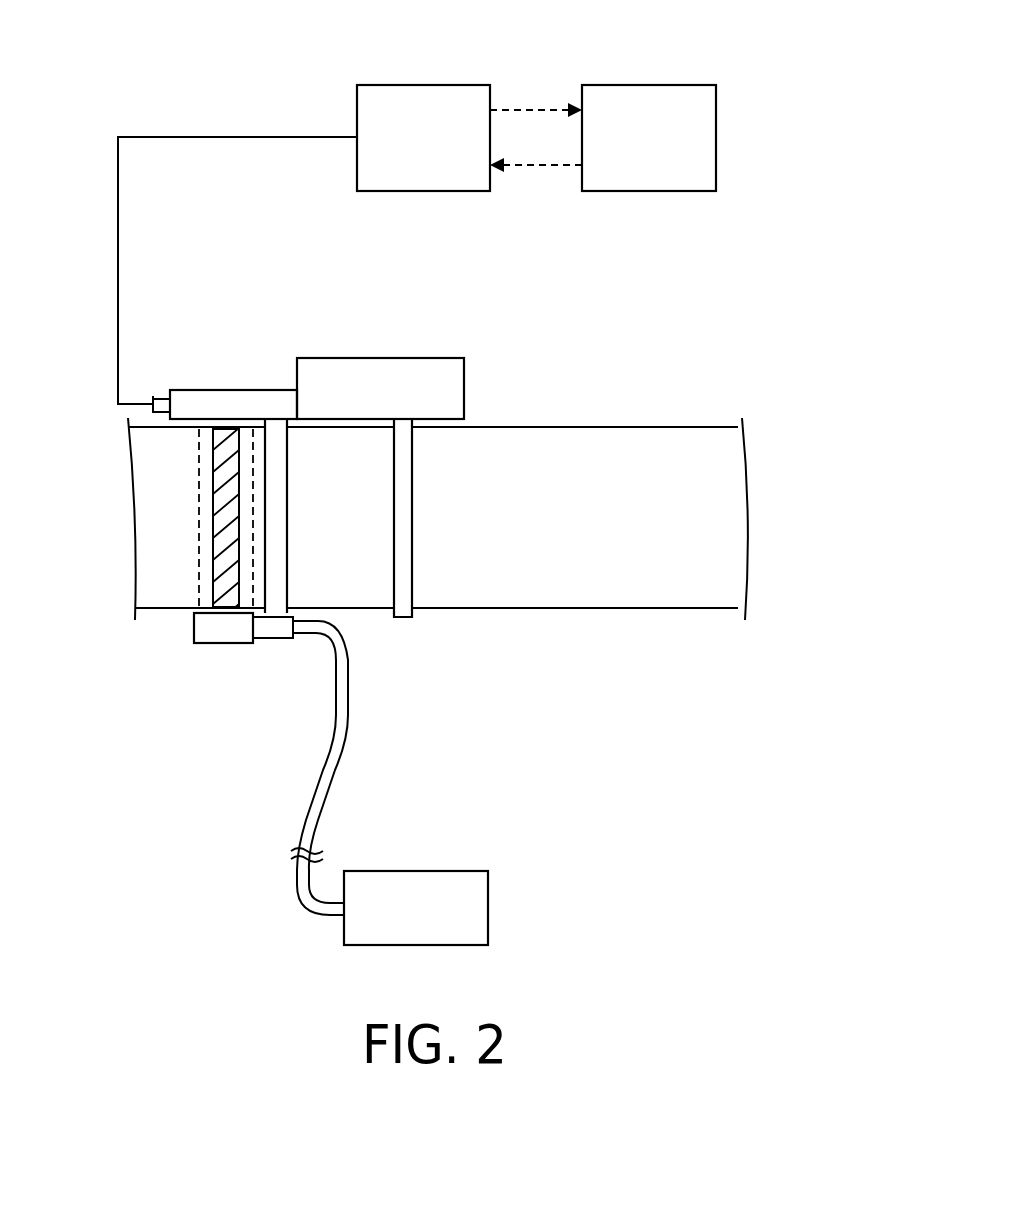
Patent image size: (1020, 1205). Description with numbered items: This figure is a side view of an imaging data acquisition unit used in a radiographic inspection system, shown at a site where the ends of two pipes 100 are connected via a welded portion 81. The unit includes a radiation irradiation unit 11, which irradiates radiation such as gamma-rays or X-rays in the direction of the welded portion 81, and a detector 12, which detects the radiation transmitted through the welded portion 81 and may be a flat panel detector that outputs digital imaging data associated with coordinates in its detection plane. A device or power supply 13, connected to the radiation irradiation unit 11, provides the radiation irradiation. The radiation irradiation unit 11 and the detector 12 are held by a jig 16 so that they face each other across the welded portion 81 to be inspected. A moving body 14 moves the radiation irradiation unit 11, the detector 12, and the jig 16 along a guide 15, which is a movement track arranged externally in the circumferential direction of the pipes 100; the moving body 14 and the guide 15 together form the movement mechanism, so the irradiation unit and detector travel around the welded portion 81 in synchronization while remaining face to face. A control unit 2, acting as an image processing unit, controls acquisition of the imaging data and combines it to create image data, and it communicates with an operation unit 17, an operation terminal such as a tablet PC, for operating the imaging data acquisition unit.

The control unit 2 is at (423, 85).
The operation unit 17 is at (650, 85).
The pipes 100 is at (613, 425).
The detector 12 is at (232, 390).
The moving body 14 is at (375, 358).
The jig 16 is at (288, 527).
The guide 15 is at (402, 617).
The radiation irradiation unit 11 is at (225, 645).
The device or power supply 13 is at (413, 870).
The welded portion 81 is at (213, 497).